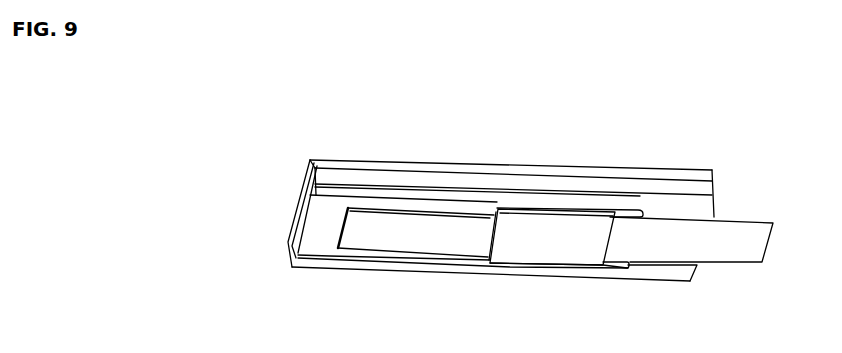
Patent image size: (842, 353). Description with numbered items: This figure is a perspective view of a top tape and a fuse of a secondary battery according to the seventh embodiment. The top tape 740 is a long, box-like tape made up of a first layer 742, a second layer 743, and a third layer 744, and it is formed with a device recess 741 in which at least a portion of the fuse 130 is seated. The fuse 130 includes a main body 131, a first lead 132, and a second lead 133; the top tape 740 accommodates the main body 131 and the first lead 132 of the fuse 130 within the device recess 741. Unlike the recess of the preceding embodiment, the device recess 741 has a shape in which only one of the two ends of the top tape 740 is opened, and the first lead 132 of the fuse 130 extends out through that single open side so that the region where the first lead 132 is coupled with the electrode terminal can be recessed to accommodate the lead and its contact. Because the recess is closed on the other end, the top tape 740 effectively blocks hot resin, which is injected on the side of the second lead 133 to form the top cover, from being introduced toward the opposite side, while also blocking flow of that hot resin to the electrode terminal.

The fuse 130 is at (555, 174).
The main body 131 is at (548, 237).
The first lead 132 is at (459, 236).
The second lead 133 is at (691, 197).
The top tape 740 is at (489, 219).
The device recess 741 is at (480, 259).
The first layer 742 is at (307, 180).
The second layer 743 is at (309, 161).
The third layer 744 is at (348, 164).